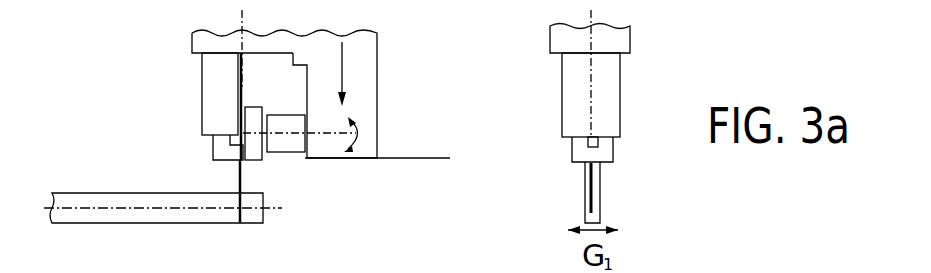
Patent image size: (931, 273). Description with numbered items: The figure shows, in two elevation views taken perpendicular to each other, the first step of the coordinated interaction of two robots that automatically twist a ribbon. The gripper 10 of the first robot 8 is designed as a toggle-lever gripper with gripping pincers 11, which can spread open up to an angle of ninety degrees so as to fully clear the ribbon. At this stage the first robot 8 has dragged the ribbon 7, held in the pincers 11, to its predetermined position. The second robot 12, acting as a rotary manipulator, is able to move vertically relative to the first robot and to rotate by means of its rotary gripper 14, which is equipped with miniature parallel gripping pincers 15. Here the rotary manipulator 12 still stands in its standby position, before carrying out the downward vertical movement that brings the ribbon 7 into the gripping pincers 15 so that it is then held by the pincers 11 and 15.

The ribbon 7 is at (125, 207).
The first robot 8 is at (205, 40).
The gripper 10 is at (220, 97).
The gripping pincers 11 is at (237, 185).
The second robot 12 is at (357, 43).
The rotary gripper 14 is at (290, 140).
The miniature parallel gripping pincers 15 is at (250, 145).